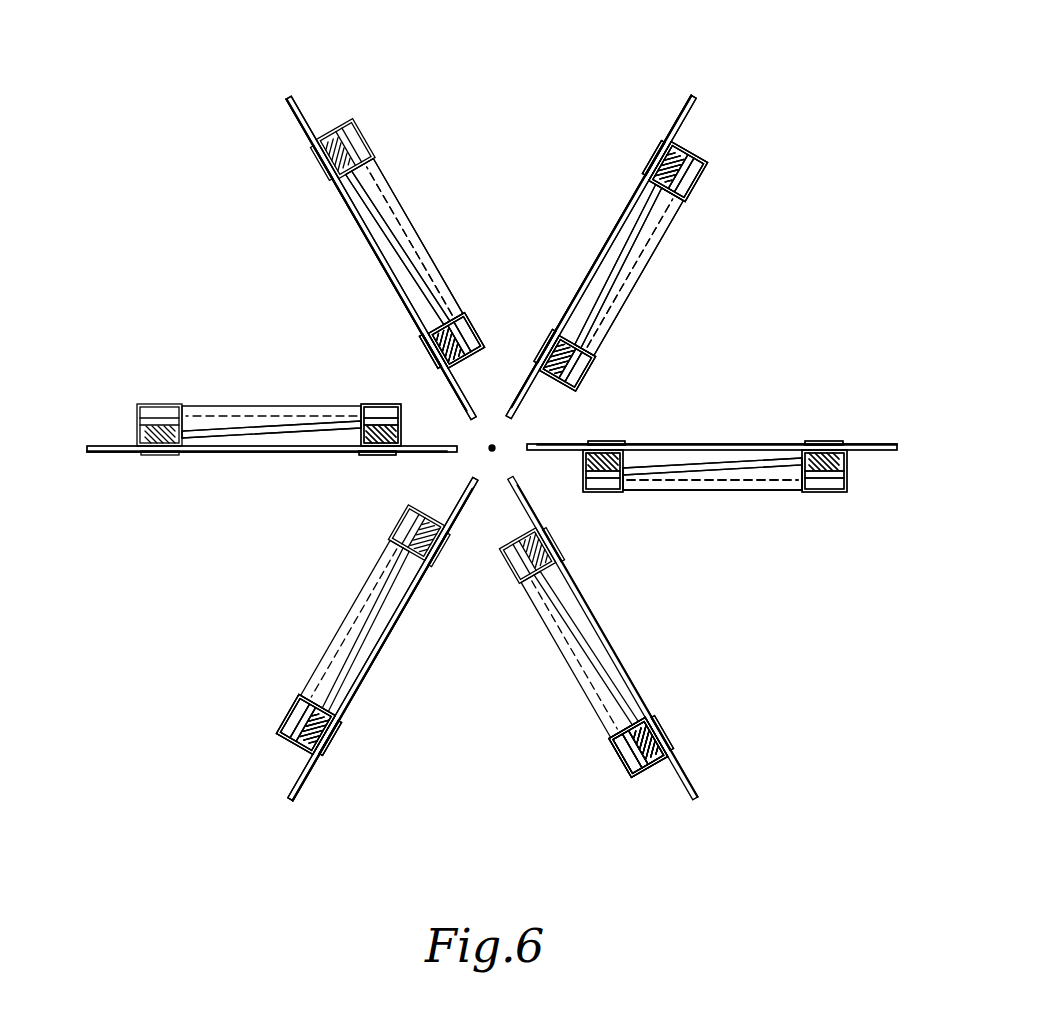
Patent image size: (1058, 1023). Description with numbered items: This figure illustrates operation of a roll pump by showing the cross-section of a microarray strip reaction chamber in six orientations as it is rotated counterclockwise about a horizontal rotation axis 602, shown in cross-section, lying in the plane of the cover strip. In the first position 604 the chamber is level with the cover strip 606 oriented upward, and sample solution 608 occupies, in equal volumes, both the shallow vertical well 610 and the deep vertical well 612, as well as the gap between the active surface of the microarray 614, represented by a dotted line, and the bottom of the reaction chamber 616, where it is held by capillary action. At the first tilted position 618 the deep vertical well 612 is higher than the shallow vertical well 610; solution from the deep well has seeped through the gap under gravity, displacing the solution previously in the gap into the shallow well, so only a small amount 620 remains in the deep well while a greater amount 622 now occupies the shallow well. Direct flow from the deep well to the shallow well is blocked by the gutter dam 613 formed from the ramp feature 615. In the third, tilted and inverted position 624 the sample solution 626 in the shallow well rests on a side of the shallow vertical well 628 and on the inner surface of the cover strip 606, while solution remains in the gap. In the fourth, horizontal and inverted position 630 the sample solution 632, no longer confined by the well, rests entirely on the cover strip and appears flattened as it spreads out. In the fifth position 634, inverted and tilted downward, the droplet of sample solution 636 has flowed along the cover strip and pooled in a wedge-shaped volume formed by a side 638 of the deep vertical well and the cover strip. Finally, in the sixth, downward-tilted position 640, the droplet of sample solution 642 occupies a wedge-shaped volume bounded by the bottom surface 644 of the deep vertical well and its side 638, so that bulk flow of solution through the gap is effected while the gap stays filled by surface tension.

The horizontal rotation axis 602 is at (489, 450).
The first position 604 is at (873, 482).
The cover strip 606 is at (895, 446).
The sample solution 608 is at (630, 492).
The shallow vertical well 610 is at (622, 445).
The deep vertical well 612 is at (820, 445).
The gutter dam 613 is at (655, 166).
The active surface of the microarray 614 is at (760, 455).
The ramp feature 615 is at (605, 272).
The bottom of the reaction chamber 616 is at (685, 470).
The first tilted position 618 is at (732, 152).
The small amount of sample solution 620 is at (699, 185).
The greater amount of sample solution 622 is at (571, 380).
The third, tilted and inverted position 624 is at (335, 108).
The sample solution 626 is at (432, 338).
The side of the shallow vertical well 628 is at (462, 355).
The fourth, horizontal and inverted position 630 is at (122, 415).
The sample solution 632 is at (343, 448).
The fifth position 634 is at (262, 787).
The droplet of sample solution 636 is at (335, 735).
The side of the deep vertical well 638 is at (293, 742).
The sixth, downward-tilted position 640 is at (683, 812).
The droplet of sample solution 642 is at (628, 755).
The bottom surface of the deep vertical well 644 is at (612, 745).